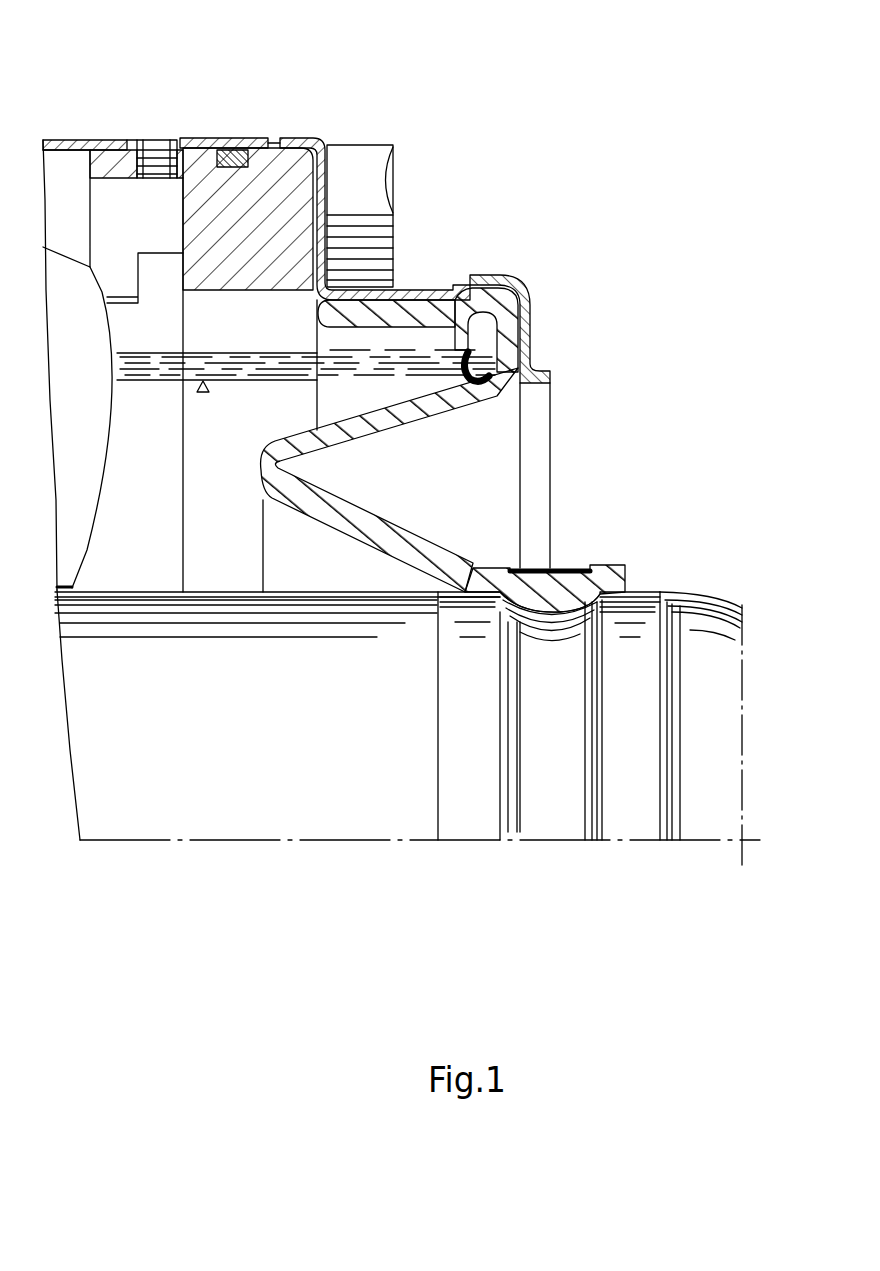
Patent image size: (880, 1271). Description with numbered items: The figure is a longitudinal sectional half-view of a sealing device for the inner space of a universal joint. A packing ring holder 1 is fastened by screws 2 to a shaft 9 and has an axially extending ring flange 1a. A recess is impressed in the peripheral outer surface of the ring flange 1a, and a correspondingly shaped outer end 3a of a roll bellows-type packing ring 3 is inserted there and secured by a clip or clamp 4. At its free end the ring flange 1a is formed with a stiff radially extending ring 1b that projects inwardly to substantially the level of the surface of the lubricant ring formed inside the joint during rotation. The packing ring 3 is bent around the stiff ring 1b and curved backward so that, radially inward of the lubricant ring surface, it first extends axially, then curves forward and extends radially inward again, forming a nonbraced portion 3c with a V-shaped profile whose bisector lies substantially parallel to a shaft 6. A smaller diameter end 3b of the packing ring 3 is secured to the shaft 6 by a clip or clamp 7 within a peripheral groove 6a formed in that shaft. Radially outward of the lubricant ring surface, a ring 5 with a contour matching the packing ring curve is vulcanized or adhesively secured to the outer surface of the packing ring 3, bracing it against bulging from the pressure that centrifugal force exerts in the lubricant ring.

The packing ring holder 1 is at (282, 140).
The ring flange 1a is at (397, 333).
The stiff radially extending ring 1b is at (498, 335).
The screws 2 is at (360, 146).
The roll bellows-type packing ring 3 is at (476, 371).
The outer end of packing ring 3a is at (420, 303).
The smaller diameter end of packing ring 3b is at (621, 568).
The nonbraced portion of packing ring 3c is at (355, 438).
The clip or clamp 4 is at (397, 291).
The ring 5 is at (527, 293).
The shaft 6 is at (470, 617).
The peripheral groove 6a is at (687, 600).
The clip or clamp 7 is at (555, 567).
The shaft 9 is at (215, 205).